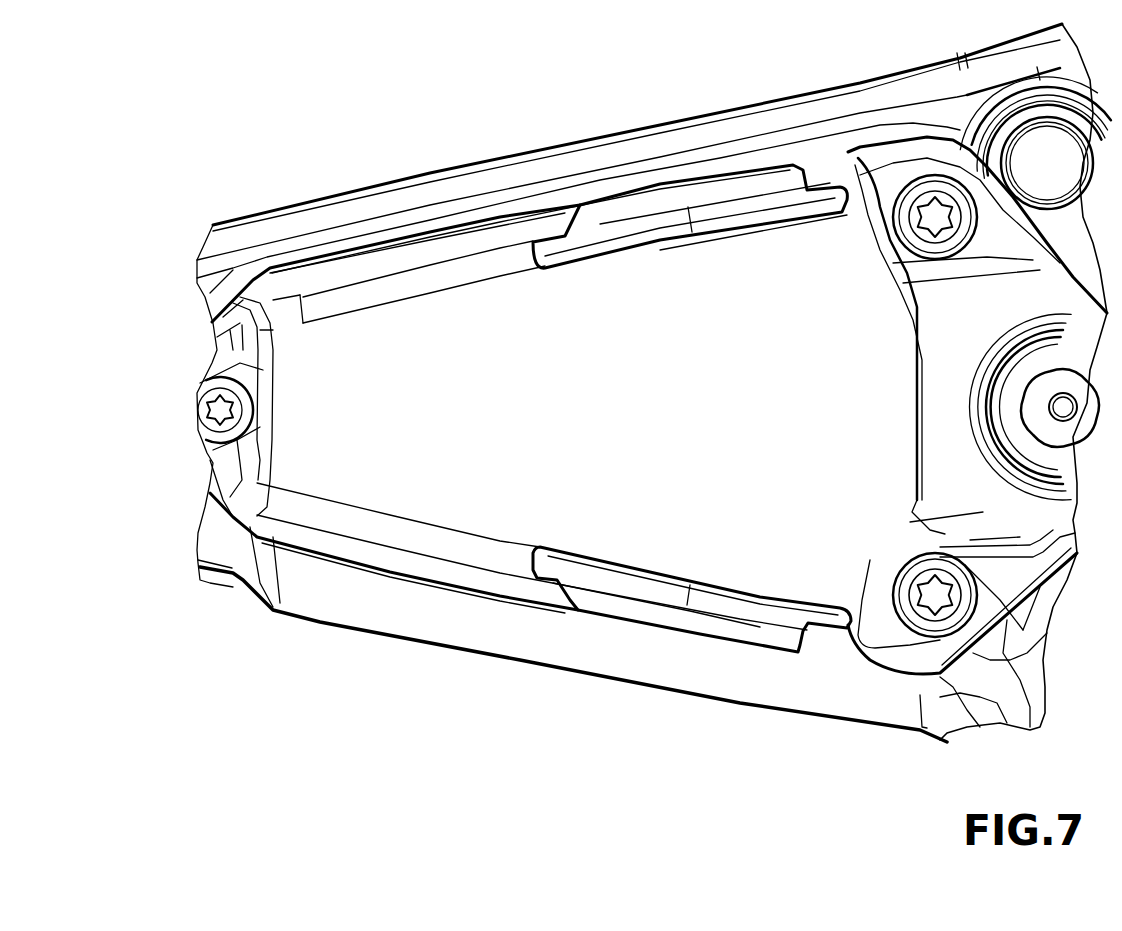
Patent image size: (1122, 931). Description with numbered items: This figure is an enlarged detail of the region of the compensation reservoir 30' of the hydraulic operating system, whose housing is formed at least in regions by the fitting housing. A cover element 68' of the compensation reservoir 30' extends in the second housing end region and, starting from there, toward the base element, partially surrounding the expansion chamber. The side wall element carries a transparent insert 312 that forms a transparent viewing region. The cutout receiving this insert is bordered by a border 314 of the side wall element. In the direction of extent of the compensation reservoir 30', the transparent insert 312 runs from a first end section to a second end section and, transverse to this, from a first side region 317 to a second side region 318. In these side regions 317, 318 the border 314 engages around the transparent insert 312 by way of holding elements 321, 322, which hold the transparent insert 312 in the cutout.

The compensation reservoir 30' is at (654, 383).
The cover element 68' is at (398, 607).
The transparent insert 312 is at (655, 585).
The border 314 is at (527, 592).
The first side region 317 is at (563, 540).
The second side region 318 is at (816, 585).
The holding element 321 is at (553, 593).
The holding element 322 is at (820, 643).